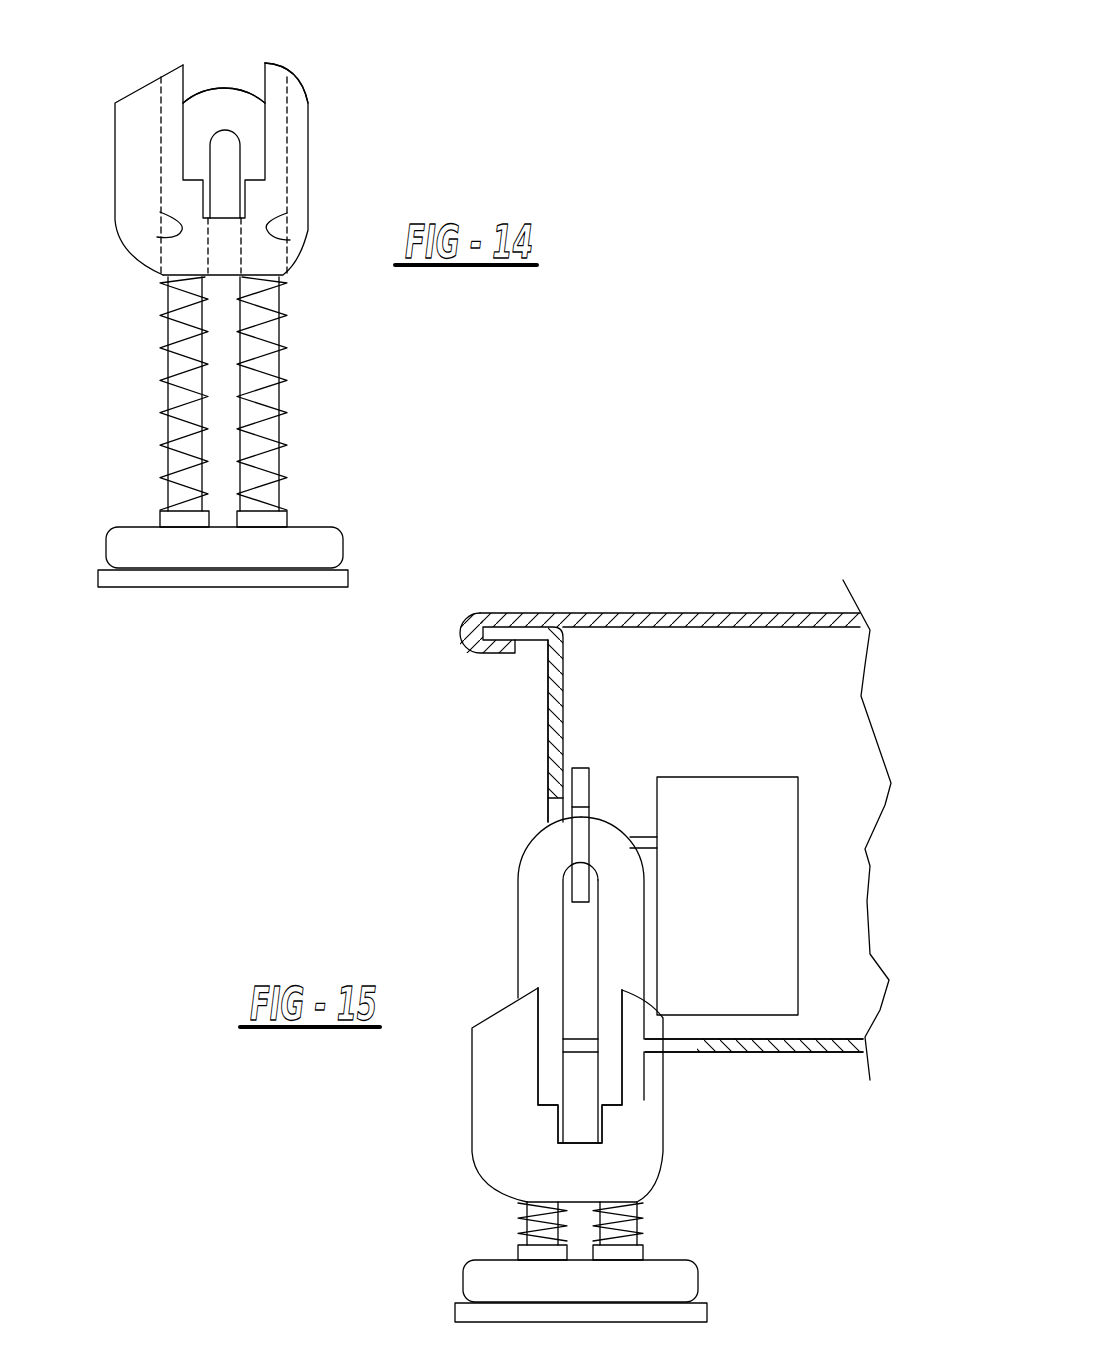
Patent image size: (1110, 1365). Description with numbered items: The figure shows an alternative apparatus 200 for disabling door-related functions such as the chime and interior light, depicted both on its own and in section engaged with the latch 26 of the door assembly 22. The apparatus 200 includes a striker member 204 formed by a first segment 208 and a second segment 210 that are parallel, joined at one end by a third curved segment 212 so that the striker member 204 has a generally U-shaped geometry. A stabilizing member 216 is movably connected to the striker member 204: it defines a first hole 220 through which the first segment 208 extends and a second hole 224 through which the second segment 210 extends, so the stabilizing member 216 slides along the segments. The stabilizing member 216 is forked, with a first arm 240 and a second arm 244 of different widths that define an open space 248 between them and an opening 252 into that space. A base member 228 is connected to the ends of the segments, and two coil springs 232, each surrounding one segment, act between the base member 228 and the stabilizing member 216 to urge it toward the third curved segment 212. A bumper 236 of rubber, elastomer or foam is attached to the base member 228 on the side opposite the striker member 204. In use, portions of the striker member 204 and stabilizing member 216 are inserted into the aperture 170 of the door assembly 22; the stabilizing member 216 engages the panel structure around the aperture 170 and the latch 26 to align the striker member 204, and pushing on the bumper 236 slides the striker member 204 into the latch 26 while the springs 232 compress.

In FIG. 15, the door assembly 22 is at (747, 614).
In FIG. 15, the latch 26 is at (733, 777).
In FIG. 15, the aperture 170 is at (555, 808).
In FIG. 14, the apparatus 200 is at (333, 127).
In FIG. 14, the striker member 204 is at (202, 100).
In FIG. 14, the first segment 208 is at (178, 367).
In FIG. 15, the first segment 208 is at (530, 932).
In FIG. 14, the second segment 210 is at (270, 367).
In FIG. 15, the second segment 210 is at (615, 922).
In FIG. 14, the third curved segment 212 is at (237, 100).
In FIG. 15, the third curved segment 212 is at (590, 838).
In FIG. 14, the stabilizing member 216 is at (308, 190).
In FIG. 15, the stabilizing member 216 is at (643, 1142).
In FIG. 14, the first hole 220 is at (157, 237).
In FIG. 14, the second hole 224 is at (290, 240).
In FIG. 14, the base member 228 is at (325, 545).
In FIG. 15, the base member 228 is at (677, 1278).
In FIG. 14, the spring 232 is at (178, 422).
In FIG. 15, the spring 232 is at (525, 1210).
In FIG. 14, the bumper 236 is at (343, 577).
In FIG. 15, the bumper 236 is at (470, 1310).
In FIG. 14, the first arm 240 is at (135, 178).
In FIG. 15, the first arm 240 is at (487, 1122).
In FIG. 14, the second arm 244 is at (308, 103).
In FIG. 14, the open space 248 is at (220, 160).
In FIG. 15, the open space 248 is at (578, 1080).
In FIG. 14, the opening 252 is at (183, 63).
In FIG. 15, the opening 252 is at (622, 990).